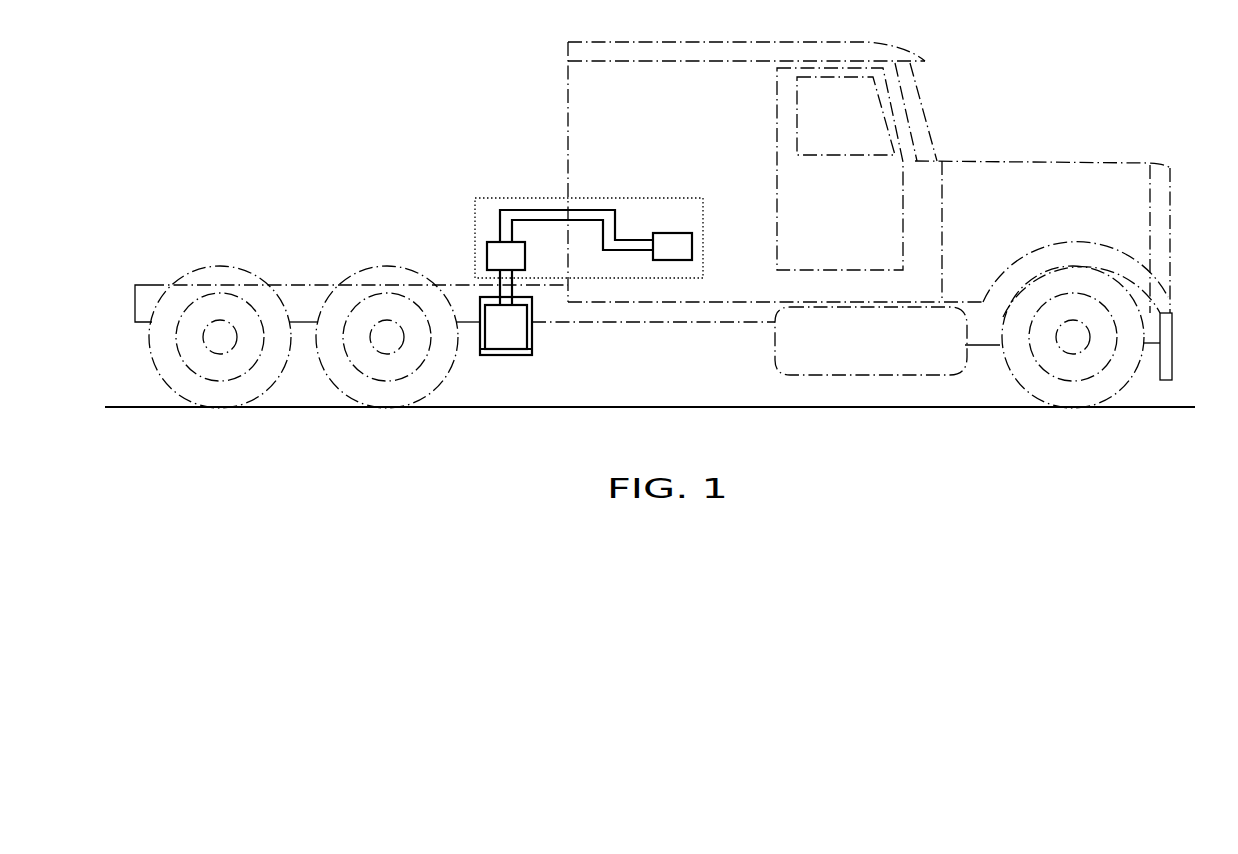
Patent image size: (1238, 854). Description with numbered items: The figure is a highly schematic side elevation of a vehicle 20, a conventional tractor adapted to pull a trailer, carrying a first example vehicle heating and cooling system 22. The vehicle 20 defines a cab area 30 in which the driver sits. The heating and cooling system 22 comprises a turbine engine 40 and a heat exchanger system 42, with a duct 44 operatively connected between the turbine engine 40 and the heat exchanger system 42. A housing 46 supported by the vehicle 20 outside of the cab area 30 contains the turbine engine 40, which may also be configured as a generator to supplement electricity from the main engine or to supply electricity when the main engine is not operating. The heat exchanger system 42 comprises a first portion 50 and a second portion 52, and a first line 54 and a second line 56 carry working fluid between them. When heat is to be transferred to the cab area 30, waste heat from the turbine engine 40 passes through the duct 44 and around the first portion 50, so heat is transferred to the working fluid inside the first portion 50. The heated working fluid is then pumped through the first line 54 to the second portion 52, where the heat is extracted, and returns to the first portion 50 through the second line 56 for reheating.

The vehicle 20 is at (1153, 113).
The vehicle heating and cooling system 22 is at (418, 207).
The cab area 30 is at (719, 121).
The turbine engine 40 is at (518, 340).
The heat exchanger system 42 is at (517, 197).
The duct 44 is at (507, 292).
The housing 46 is at (490, 353).
The first portion 50 is at (486, 258).
The second portion 52 is at (683, 247).
The first line 54 is at (585, 209).
The second line 56 is at (578, 222).